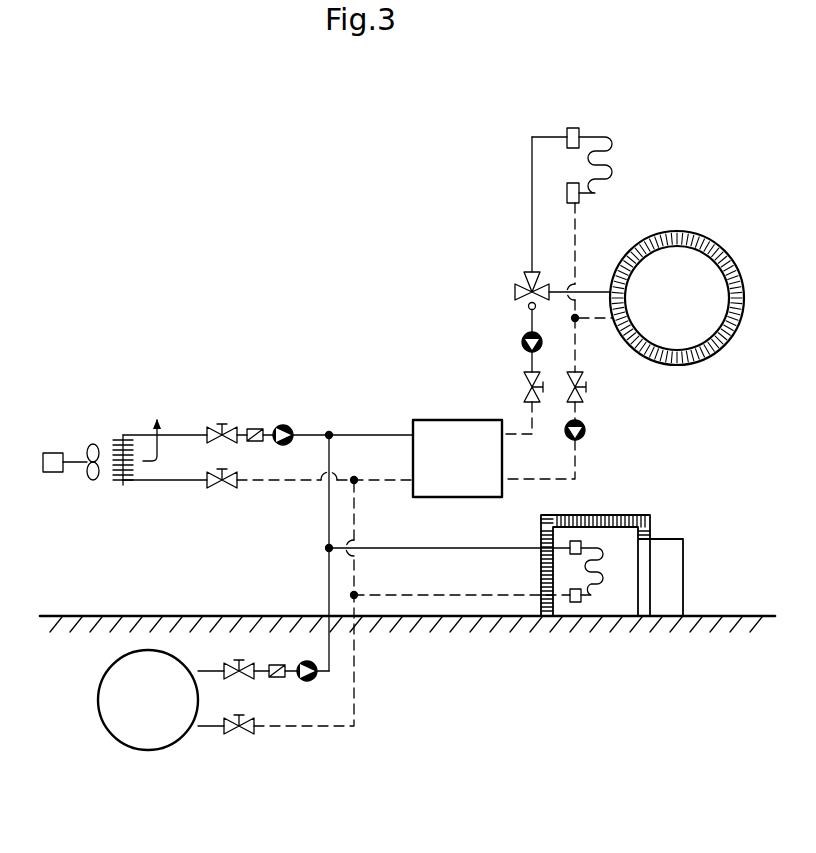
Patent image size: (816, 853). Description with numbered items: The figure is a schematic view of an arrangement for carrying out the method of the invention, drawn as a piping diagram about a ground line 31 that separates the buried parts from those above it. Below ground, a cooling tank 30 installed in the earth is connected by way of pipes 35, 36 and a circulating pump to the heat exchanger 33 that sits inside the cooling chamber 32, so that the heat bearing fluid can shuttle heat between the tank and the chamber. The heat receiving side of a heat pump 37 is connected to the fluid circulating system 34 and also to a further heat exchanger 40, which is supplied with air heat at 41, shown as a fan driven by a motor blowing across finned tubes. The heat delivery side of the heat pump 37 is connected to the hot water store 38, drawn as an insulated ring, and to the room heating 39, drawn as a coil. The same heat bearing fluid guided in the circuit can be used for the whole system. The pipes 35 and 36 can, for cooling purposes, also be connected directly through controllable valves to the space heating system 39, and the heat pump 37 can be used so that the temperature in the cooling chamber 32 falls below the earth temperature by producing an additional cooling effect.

The cooling tank 30 is at (149, 740).
The ground surface 31 is at (193, 611).
The cooling chamber 32 is at (630, 537).
The heat exchanger 33 is at (594, 540).
The fluid circulating system 34 is at (431, 581).
The pipe 35 is at (508, 597).
The pipe 36 is at (440, 546).
The heat pump 37 is at (443, 430).
The hot water store 38 is at (672, 231).
The room heating 39 is at (604, 128).
The heat exchanger 40 is at (127, 430).
The air heat supply 41 is at (72, 439).